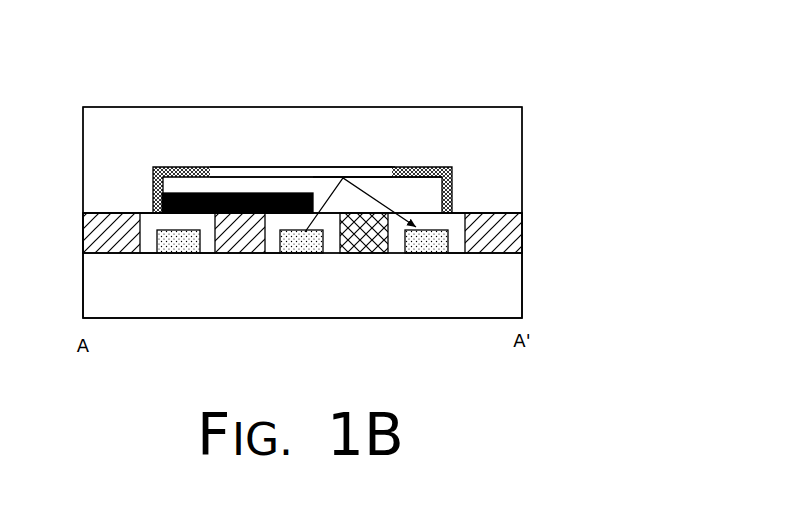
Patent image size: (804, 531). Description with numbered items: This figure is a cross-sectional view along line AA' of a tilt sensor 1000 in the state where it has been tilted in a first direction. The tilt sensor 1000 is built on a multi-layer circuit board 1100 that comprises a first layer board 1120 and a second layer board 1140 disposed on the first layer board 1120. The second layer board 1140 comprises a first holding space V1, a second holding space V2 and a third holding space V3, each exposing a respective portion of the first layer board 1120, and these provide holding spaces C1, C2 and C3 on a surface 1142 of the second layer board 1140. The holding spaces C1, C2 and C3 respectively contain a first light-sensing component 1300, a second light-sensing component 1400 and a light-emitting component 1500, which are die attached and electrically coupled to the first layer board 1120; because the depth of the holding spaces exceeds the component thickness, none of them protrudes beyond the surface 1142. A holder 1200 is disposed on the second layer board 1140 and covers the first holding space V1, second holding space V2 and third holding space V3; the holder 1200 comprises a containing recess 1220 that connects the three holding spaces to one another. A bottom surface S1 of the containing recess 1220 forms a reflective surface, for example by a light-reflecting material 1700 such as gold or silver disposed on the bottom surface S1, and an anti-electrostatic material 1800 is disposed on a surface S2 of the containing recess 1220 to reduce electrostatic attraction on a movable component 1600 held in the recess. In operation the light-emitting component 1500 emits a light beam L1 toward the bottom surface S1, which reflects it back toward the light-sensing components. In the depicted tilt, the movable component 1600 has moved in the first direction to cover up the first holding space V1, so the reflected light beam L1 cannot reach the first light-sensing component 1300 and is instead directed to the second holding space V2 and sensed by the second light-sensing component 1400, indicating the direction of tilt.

The tilt sensor 1000 is at (590, 330).
The multi-layer circuit board 1100 is at (605, 231).
The first layer board 1120 is at (498, 292).
The second layer board 1140 is at (512, 236).
The surface of the second layer board 1142 is at (116, 208).
The holder 1200 is at (498, 152).
The containing recess 1220 is at (385, 180).
The first light-sensing component 1300 is at (173, 247).
The second light-sensing component 1400 is at (423, 248).
The light-emitting component 1500 is at (305, 232).
The movable component 1600 is at (233, 192).
The light-reflecting material 1700 is at (341, 164).
The anti-electrostatic material 1800 is at (170, 165).
The first holding space V1 is at (144, 216).
The second holding space V2 is at (428, 205).
The third holding space V3 is at (275, 217).
The holding space C1 is at (207, 216).
The holding space C2 is at (458, 222).
The holding space C3 is at (375, 248).
The bottom surface of the containing recess S1 is at (377, 164).
The surface of the containing recess S2 is at (170, 213).
The light beam L1 is at (327, 192).